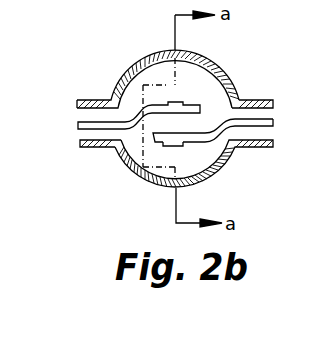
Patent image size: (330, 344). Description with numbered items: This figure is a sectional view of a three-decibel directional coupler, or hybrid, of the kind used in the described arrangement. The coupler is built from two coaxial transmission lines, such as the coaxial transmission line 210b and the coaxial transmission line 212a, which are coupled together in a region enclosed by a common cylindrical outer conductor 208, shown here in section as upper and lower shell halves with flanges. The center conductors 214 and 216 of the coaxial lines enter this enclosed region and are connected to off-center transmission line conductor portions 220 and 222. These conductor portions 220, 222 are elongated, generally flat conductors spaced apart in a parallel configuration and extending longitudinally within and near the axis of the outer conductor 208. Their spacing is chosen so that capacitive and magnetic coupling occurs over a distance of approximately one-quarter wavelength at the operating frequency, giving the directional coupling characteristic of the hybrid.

The off-center transmission line conductor portion 220 is at (202, 114).
The coaxial transmission line 212a is at (262, 100).
The common outer conductor 208 is at (228, 162).
The coaxial transmission line 210b is at (93, 147).
The center conductor 216 is at (78, 124).
The center conductor 214 is at (273, 123).
The off-center transmission line conductor portion 222 is at (157, 144).